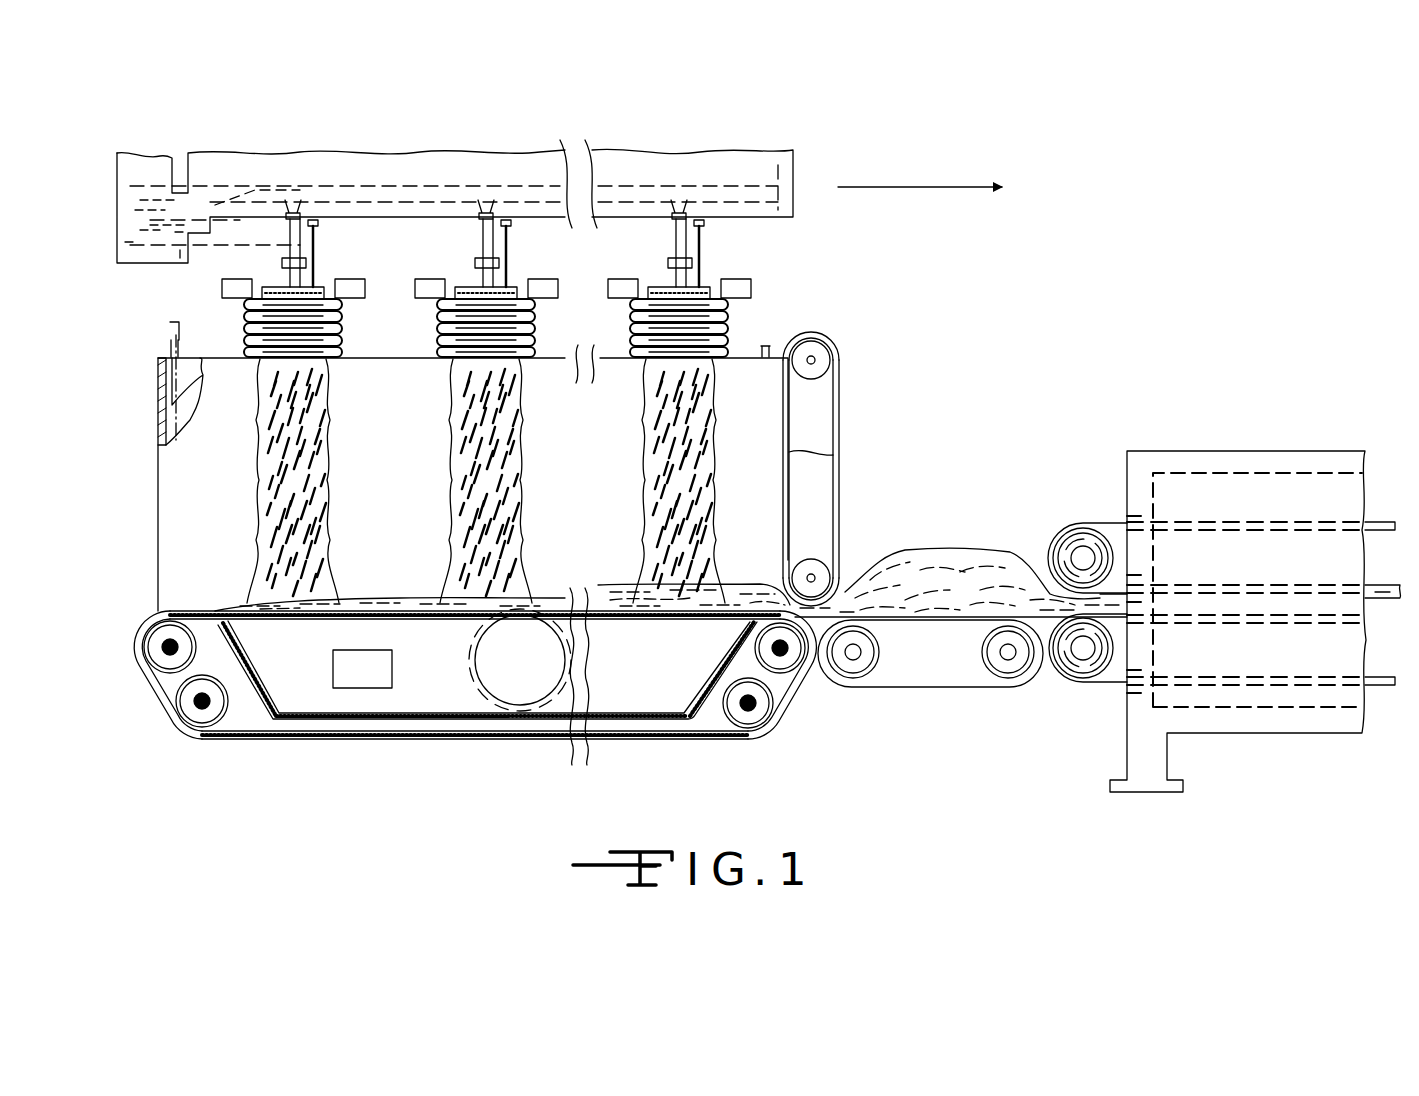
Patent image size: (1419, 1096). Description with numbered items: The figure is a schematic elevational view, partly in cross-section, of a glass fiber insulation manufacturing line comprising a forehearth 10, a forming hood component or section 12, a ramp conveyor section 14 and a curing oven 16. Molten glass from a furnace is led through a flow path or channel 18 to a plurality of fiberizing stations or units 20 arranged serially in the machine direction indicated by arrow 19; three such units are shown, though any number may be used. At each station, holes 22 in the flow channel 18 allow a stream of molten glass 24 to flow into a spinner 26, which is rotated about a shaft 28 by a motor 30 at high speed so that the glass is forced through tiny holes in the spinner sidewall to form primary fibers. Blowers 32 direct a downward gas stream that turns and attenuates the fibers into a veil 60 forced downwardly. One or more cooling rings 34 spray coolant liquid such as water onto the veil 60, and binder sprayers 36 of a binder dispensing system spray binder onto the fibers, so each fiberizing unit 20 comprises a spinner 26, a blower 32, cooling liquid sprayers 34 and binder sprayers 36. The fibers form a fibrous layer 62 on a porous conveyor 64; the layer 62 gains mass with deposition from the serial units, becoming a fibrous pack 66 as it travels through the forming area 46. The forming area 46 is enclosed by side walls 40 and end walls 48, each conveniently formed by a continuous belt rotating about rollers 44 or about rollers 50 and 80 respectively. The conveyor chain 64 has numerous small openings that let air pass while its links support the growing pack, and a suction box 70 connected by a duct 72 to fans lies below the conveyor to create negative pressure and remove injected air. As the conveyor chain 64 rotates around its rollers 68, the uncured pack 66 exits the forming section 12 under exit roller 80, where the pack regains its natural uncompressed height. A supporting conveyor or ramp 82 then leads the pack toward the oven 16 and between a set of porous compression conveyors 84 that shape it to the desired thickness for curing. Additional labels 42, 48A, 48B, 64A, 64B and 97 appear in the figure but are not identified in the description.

The forehearth 10 is at (700, 138).
The forming hood component or section 12 is at (853, 432).
The ramp conveyor section 14 is at (942, 536).
The curing oven 16 is at (1228, 440).
The flow path or channel 18 is at (234, 196).
The machine direction arrow 19 is at (920, 201).
The fiberizing station or unit 20 is at (505, 278).
The holes 22 is at (513, 157).
The stream of molten glass 24 is at (341, 253).
The spinner 26 is at (486, 226).
The shaft 28 is at (653, 252).
The motor 30 is at (655, 257).
The blower 32 is at (310, 272).
The cooling ring 34 is at (320, 313).
The binder sprayer 36 is at (320, 337).
The side wall 40 is at (762, 424).
The chamber wall liner 42 is at (165, 382).
The roller 44 is at (176, 340).
The forming area 46 is at (618, 388).
The end wall 48 is at (850, 469).
The belt inner surface 48A is at (840, 458).
The belt outer surface 48B is at (841, 484).
The roller 50 is at (825, 360).
The veil 60 is at (455, 475).
The fibrous layer 62 is at (378, 604).
The porous conveyor 64 is at (487, 669).
The upper belt run 64A is at (360, 621).
The lower belt run 64B is at (375, 741).
The fibrous pack 66 is at (625, 592).
The rollers 68 is at (202, 712).
The suction box 70 is at (695, 690).
The duct 72 is at (508, 690).
The exit roller 80 is at (820, 576).
The supporting conveyor or ramp 82 is at (922, 652).
The porous compression conveyors 84 is at (1088, 545).
The control unit 97 is at (358, 672).